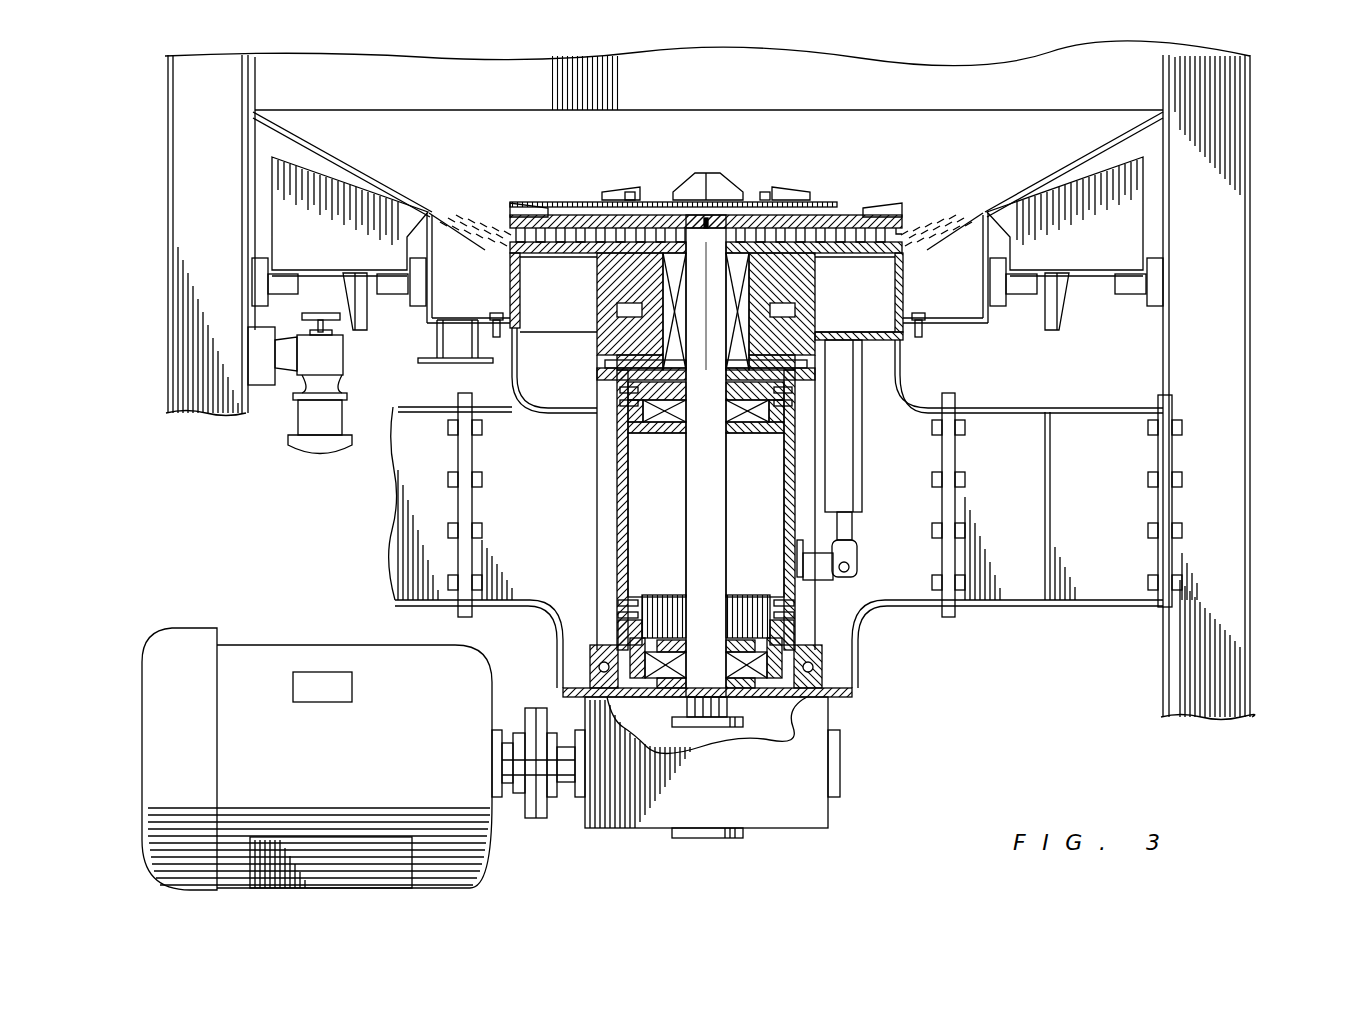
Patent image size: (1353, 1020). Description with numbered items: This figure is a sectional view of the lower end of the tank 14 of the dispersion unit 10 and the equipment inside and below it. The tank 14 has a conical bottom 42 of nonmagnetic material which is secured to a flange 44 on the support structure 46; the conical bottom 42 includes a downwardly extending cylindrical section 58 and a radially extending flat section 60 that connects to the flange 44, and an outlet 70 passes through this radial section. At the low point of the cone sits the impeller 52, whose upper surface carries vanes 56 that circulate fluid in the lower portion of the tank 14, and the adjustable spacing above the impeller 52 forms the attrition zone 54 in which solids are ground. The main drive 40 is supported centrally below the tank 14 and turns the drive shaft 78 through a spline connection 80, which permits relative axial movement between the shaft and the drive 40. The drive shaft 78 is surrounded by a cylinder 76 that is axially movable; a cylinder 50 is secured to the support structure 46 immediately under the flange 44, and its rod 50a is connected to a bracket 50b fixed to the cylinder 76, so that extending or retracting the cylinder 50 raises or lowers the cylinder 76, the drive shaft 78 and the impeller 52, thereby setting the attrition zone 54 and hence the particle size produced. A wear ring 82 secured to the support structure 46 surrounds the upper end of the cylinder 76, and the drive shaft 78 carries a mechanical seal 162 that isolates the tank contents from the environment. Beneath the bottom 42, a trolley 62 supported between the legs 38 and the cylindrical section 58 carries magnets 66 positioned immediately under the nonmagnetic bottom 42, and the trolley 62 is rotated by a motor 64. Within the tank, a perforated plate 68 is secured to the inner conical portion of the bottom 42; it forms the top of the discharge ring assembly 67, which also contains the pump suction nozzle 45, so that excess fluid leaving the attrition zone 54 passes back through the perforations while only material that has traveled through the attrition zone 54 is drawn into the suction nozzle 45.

The dispersion unit 10 is at (1278, 336).
The tank 14 is at (255, 80).
The legs 38 is at (168, 183).
The main drive 40 is at (820, 805).
The conical bottom 42 is at (1142, 153).
The flange 44 is at (930, 333).
The pump suction nozzle 45 is at (427, 365).
The support structure 46 is at (913, 392).
The cylinder 50 is at (863, 437).
The rod 50a is at (845, 530).
The bracket 50b is at (833, 567).
The impeller 52 is at (813, 212).
The attrition zone 54 is at (852, 237).
The vanes 56 is at (798, 186).
The cylindrical section 58 is at (977, 237).
The flat section 60 is at (945, 320).
The trolley 62 is at (265, 228).
The motor 64 is at (317, 457).
The magnets 66 is at (332, 183).
The discharge ring assembly 67 is at (427, 313).
The perforated plate 68 is at (943, 216).
The outlet 70 is at (455, 327).
The fixed cylinder 76 is at (622, 490).
The drive shaft 78 is at (717, 533).
The spline connection 80 is at (690, 710).
The wear ring 82 is at (627, 290).
The mechanical seal 162 is at (673, 342).